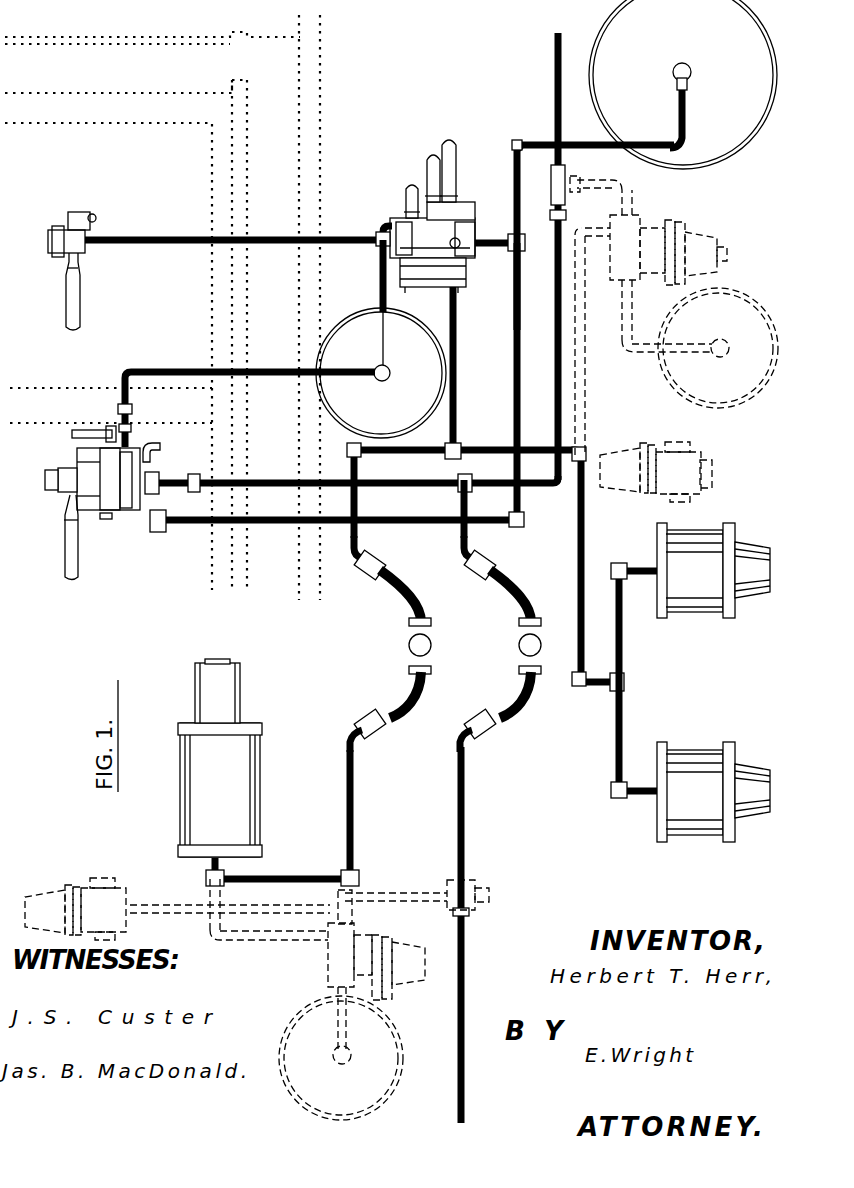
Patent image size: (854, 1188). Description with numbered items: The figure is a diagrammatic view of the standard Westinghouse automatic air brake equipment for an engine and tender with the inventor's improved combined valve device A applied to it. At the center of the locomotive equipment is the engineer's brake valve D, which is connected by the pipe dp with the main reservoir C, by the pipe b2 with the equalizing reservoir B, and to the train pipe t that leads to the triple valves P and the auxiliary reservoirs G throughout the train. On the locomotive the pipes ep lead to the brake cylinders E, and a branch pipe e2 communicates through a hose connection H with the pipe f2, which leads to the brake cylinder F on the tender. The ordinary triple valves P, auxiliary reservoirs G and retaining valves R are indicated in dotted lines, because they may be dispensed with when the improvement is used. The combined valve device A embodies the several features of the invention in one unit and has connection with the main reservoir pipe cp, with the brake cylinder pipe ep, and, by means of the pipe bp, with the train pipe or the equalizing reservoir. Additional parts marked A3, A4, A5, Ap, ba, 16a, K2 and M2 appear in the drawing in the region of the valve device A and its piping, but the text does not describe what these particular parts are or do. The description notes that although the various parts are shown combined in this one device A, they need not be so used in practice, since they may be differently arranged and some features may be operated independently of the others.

The valve A3 is at (68, 290).
The pipe A4 is at (262, 237).
The combined valve device A is at (466, 195).
The elbow A5 is at (380, 225).
The valve part A' Ap is at (380, 248).
The pipe bp is at (399, 216).
The knob ba is at (411, 195).
The valve casing 16a is at (432, 288).
The knob K2 is at (430, 180).
The knob M2 is at (449, 160).
The main reservoir pipe cp is at (514, 170).
The main reservoir C is at (636, 62).
The train pipe t is at (553, 290).
The pipe dp is at (511, 318).
The brake cylinder pipe ep is at (493, 450).
The branch pipe e2 is at (440, 452).
The equalizing reservoir B is at (366, 352).
The pipe b2 is at (272, 372).
The engineer's brake valve D is at (108, 482).
The hose connection H is at (400, 590).
The pipe f2 is at (348, 806).
The brake cylinder F is at (222, 802).
The triple valve P is at (624, 250).
The auxiliary reservoir G is at (700, 370).
The retaining valve R is at (656, 466).
The brake cylinder E is at (702, 580).